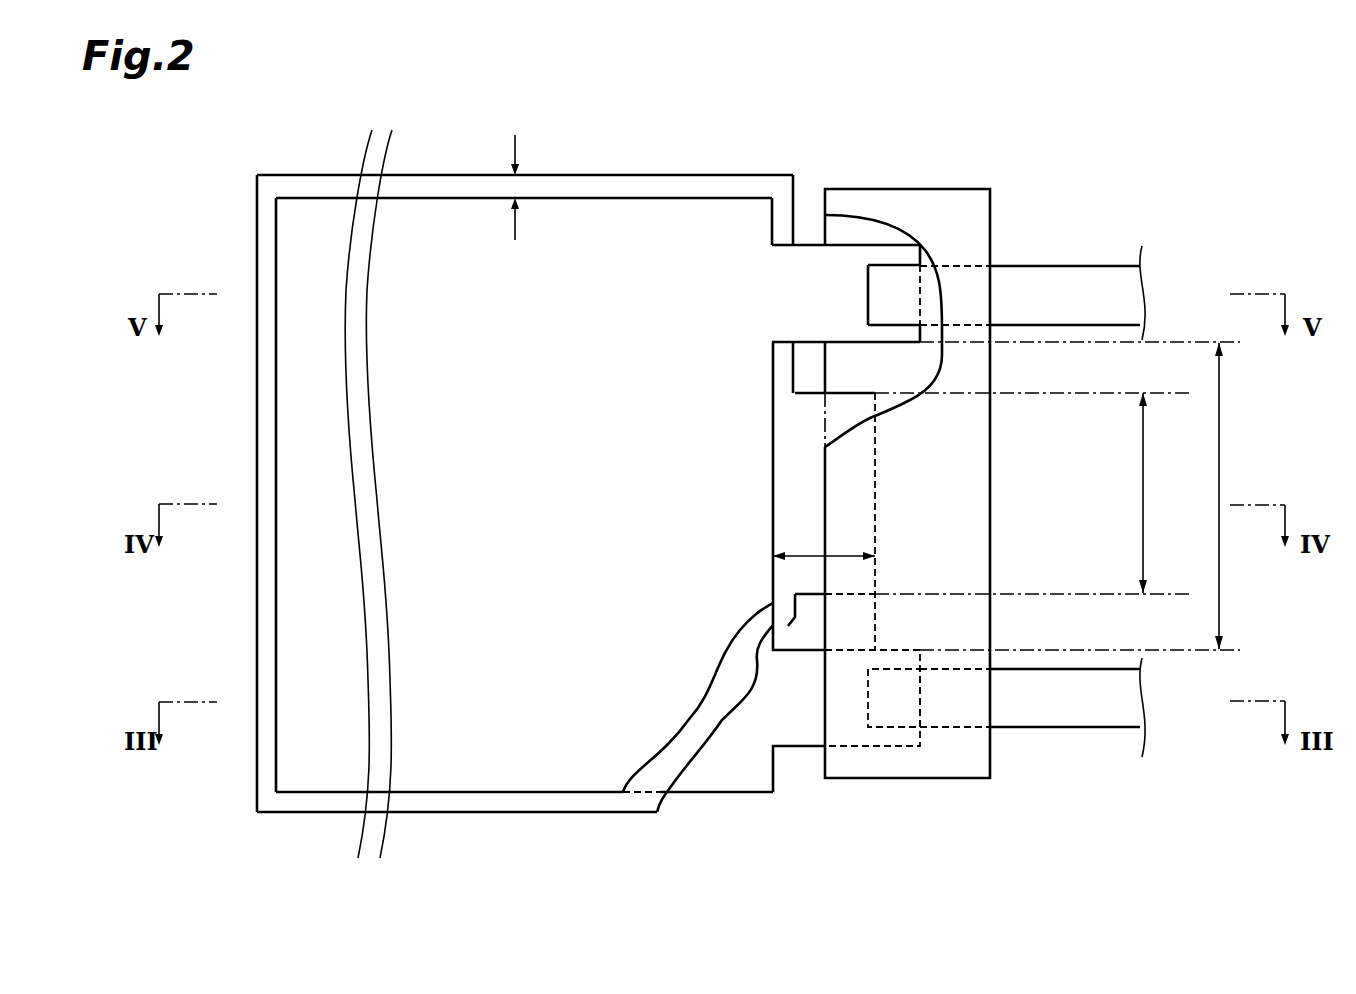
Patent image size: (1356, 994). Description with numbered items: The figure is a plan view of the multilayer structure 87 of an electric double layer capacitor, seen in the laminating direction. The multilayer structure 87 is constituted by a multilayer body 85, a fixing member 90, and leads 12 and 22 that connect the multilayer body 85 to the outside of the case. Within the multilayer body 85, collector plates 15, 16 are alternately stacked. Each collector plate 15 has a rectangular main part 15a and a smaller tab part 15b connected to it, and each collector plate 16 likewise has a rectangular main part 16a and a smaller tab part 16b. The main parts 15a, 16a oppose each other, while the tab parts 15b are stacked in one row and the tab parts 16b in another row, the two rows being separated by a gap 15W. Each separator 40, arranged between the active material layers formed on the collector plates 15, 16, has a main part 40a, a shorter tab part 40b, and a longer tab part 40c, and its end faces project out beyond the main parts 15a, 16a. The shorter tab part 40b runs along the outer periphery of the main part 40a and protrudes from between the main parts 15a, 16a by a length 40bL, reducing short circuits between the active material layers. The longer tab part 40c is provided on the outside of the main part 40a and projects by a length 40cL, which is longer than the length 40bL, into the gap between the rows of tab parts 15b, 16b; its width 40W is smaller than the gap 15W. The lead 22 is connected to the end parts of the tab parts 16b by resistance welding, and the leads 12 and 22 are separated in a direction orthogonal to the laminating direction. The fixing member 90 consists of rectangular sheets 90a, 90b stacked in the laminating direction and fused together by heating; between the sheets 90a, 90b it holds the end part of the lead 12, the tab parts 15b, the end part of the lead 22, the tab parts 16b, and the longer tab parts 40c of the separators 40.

The lead 12 is at (1085, 266).
The collector plate 15 is at (566, 229).
The main part 15a is at (650, 198).
The tab part 15b is at (823, 254).
The gap 15W is at (1251, 496).
The collector plate 16 is at (557, 607).
The main part 16a is at (726, 750).
The tab part 16b is at (815, 588).
The lead 22 is at (1082, 728).
The separator 40 is at (900, 639).
The main part 40a is at (750, 642).
The shorter tab part 40b is at (608, 800).
The longer tab part 40c is at (845, 412).
The width 40W is at (1175, 493).
The length 40bL is at (513, 186).
The length 40cL is at (805, 553).
The multilayer body 85 is at (537, 817).
The multilayer structure 87 is at (1186, 806).
The fixing member 90 is at (973, 346).
The rectangular sheet 90a is at (966, 458).
The rectangular sheet 90b is at (930, 365).